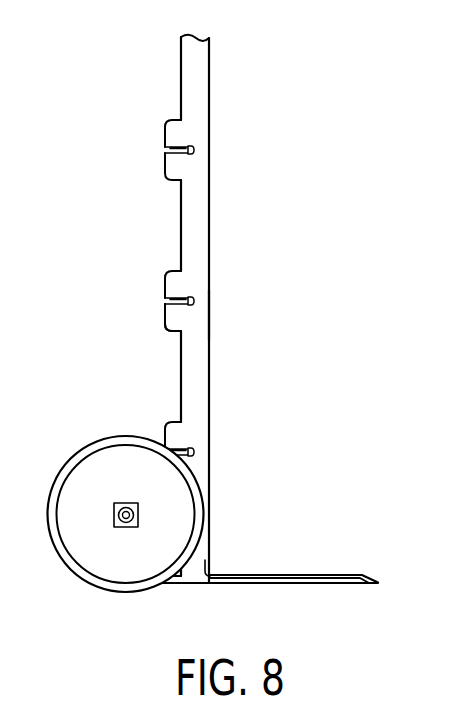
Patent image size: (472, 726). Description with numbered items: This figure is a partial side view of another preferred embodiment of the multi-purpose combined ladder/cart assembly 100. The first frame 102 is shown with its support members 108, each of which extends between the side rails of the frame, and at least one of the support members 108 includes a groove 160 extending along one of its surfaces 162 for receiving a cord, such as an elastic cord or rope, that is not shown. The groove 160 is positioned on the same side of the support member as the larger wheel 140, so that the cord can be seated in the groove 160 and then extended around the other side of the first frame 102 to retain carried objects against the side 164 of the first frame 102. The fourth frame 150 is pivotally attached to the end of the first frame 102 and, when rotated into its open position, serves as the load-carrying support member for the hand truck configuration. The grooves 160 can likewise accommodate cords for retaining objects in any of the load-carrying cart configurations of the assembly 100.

The multi-purpose combined ladder/cart assembly 100 is at (287, 120).
The first frame 102 is at (197, 202).
The support member 108 is at (173, 279).
The larger wheel 140 is at (103, 563).
The fourth frame 150 is at (325, 580).
The groove 160 is at (165, 301).
The surface 162 is at (163, 318).
The side 164 is at (208, 317).